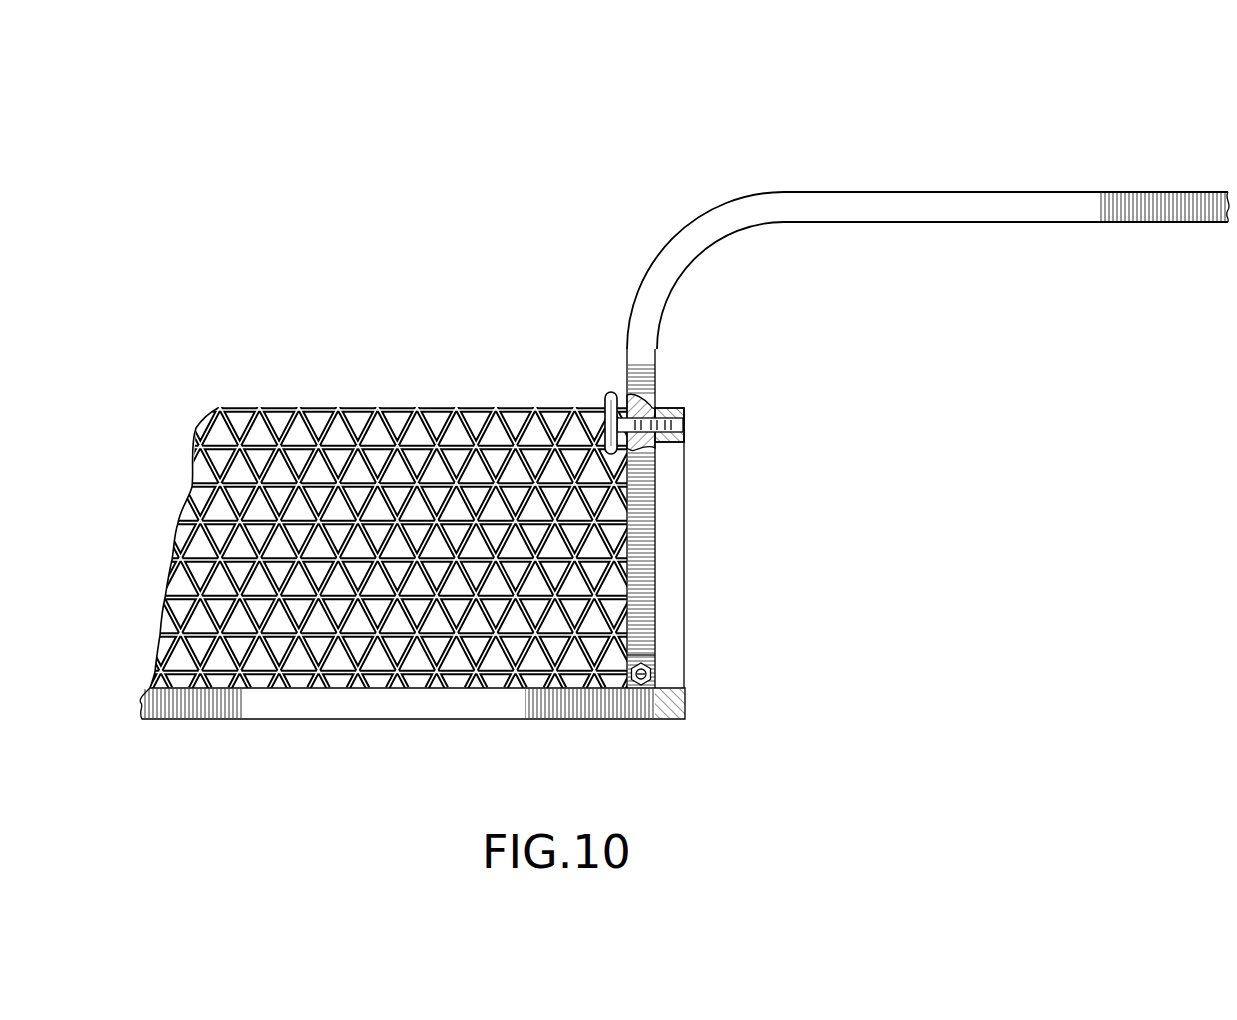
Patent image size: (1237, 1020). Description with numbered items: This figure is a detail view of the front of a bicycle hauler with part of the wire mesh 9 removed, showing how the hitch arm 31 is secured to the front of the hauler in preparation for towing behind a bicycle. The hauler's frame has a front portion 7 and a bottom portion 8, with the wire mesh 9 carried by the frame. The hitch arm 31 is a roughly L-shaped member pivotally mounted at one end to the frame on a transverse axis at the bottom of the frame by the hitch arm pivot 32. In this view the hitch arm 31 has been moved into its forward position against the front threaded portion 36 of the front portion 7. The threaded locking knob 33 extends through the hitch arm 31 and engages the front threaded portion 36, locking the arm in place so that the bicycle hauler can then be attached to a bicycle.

The front portion 7 is at (685, 570).
The bottom portion 8 is at (565, 720).
The wire mesh 9 is at (390, 445).
The hitch arm 31 is at (1029, 192).
The hitch arm pivot 32 is at (652, 674).
The threaded locking knob 33 is at (603, 412).
The front threaded portion 36 is at (677, 408).